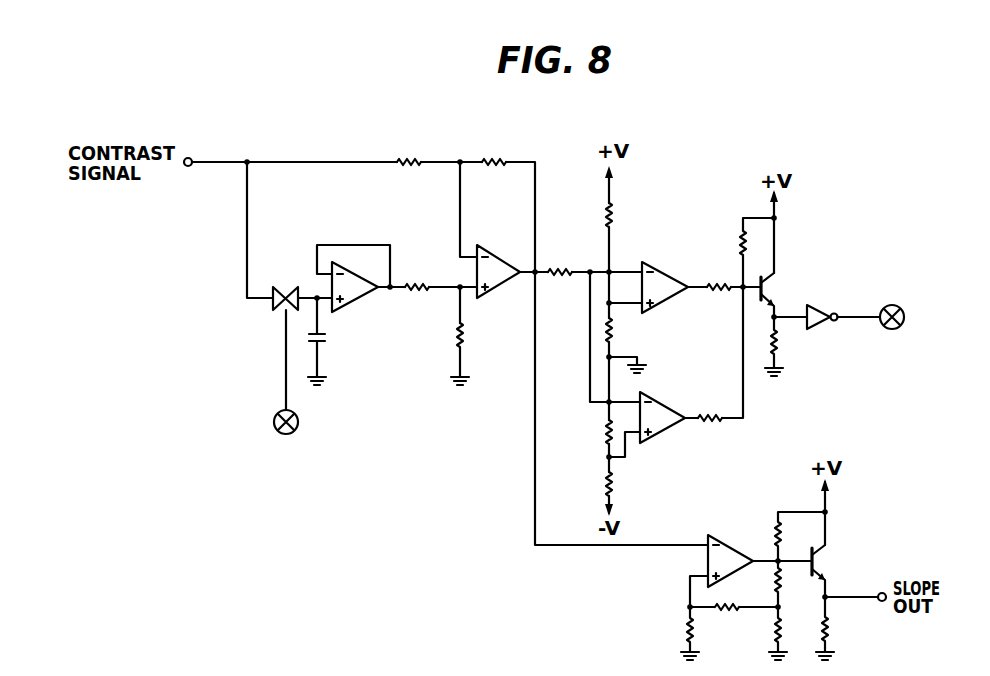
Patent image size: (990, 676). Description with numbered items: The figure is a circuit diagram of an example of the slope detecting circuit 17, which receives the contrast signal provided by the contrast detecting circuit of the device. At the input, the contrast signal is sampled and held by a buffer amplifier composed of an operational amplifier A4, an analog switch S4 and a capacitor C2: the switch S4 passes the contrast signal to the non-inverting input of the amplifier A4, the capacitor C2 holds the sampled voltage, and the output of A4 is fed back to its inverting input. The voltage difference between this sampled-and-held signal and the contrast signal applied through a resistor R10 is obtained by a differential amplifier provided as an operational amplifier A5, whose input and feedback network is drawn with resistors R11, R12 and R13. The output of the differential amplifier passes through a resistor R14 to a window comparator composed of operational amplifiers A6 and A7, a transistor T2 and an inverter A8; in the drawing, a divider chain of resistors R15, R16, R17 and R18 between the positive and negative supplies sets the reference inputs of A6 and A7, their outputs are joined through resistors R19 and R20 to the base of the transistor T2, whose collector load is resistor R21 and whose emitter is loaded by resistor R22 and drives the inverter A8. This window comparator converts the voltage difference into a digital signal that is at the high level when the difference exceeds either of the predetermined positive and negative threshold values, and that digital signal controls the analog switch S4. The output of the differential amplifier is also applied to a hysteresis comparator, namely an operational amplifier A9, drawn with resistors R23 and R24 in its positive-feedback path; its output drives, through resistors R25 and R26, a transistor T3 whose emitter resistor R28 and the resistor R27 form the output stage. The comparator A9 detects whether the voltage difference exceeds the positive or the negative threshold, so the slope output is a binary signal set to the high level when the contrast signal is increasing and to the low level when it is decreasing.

The resistor R10 is at (412, 148).
The resistor R11 is at (425, 274).
The resistor R12 is at (500, 148).
The resistor R13 is at (476, 352).
The resistor R14 is at (564, 257).
The resistor R15 is at (629, 212).
The resistor R16 is at (628, 331).
The resistor R17 is at (591, 429).
The resistor R18 is at (590, 482).
The resistor R19 is at (720, 274).
The resistor R20 is at (714, 403).
The resistor R21 is at (741, 252).
The resistor R22 is at (791, 346).
The resistor R23 is at (674, 633).
The resistor R24 is at (734, 620).
The resistor R25 is at (783, 536).
The resistor R26 is at (761, 584).
The resistor R27 is at (793, 633).
The resistor R28 is at (840, 628).
The operational amplifier A4 is at (353, 278).
The operational amplifier A5 is at (504, 271).
The operational amplifier A6 is at (658, 287).
The operational amplifier A7 is at (653, 424).
The inverter A8 is at (821, 308).
The operational amplifier A9 is at (751, 571).
The analog switch S4 is at (285, 346).
The capacitor C2 is at (329, 341).
The transistor T2 is at (780, 295).
The transistor T3 is at (830, 571).
The slope detecting circuit 17 is at (385, 507).